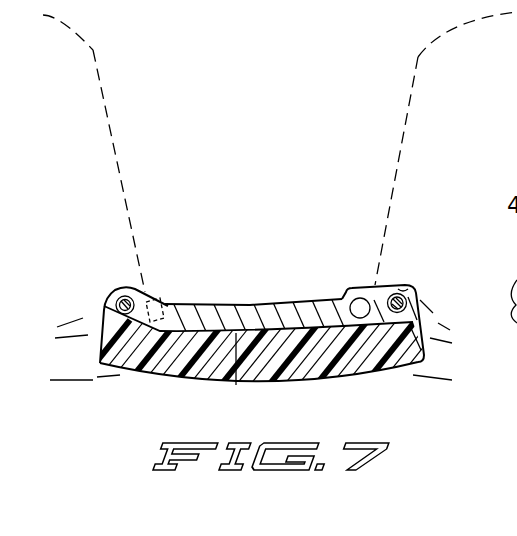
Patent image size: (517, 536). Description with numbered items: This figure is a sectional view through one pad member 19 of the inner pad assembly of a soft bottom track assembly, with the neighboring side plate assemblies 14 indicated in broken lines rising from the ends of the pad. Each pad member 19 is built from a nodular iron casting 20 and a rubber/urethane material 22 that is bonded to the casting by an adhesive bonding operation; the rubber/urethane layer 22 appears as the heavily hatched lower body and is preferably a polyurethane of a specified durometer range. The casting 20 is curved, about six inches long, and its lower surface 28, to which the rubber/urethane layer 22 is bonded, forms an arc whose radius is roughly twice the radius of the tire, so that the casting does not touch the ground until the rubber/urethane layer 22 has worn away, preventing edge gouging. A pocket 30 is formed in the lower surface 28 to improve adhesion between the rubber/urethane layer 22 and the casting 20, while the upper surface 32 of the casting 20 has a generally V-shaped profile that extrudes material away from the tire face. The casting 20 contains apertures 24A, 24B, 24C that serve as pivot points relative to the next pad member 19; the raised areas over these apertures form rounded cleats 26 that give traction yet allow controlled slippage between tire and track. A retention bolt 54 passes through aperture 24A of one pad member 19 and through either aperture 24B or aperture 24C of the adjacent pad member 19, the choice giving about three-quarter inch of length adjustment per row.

The side plate assembly 14 is at (100, 47).
The pad member 19 is at (141, 372).
The nodular iron casting 20 is at (320, 303).
The rubber/urethane material 22 is at (337, 365).
The aperture 24A is at (135, 330).
The aperture 24B is at (357, 297).
The aperture 24C is at (403, 288).
The cleat 26 is at (122, 288).
The lower surface 28 is at (176, 310).
The pocket 30 is at (236, 385).
The upper surface 32 is at (245, 307).
The retention bolt 54 is at (114, 304).